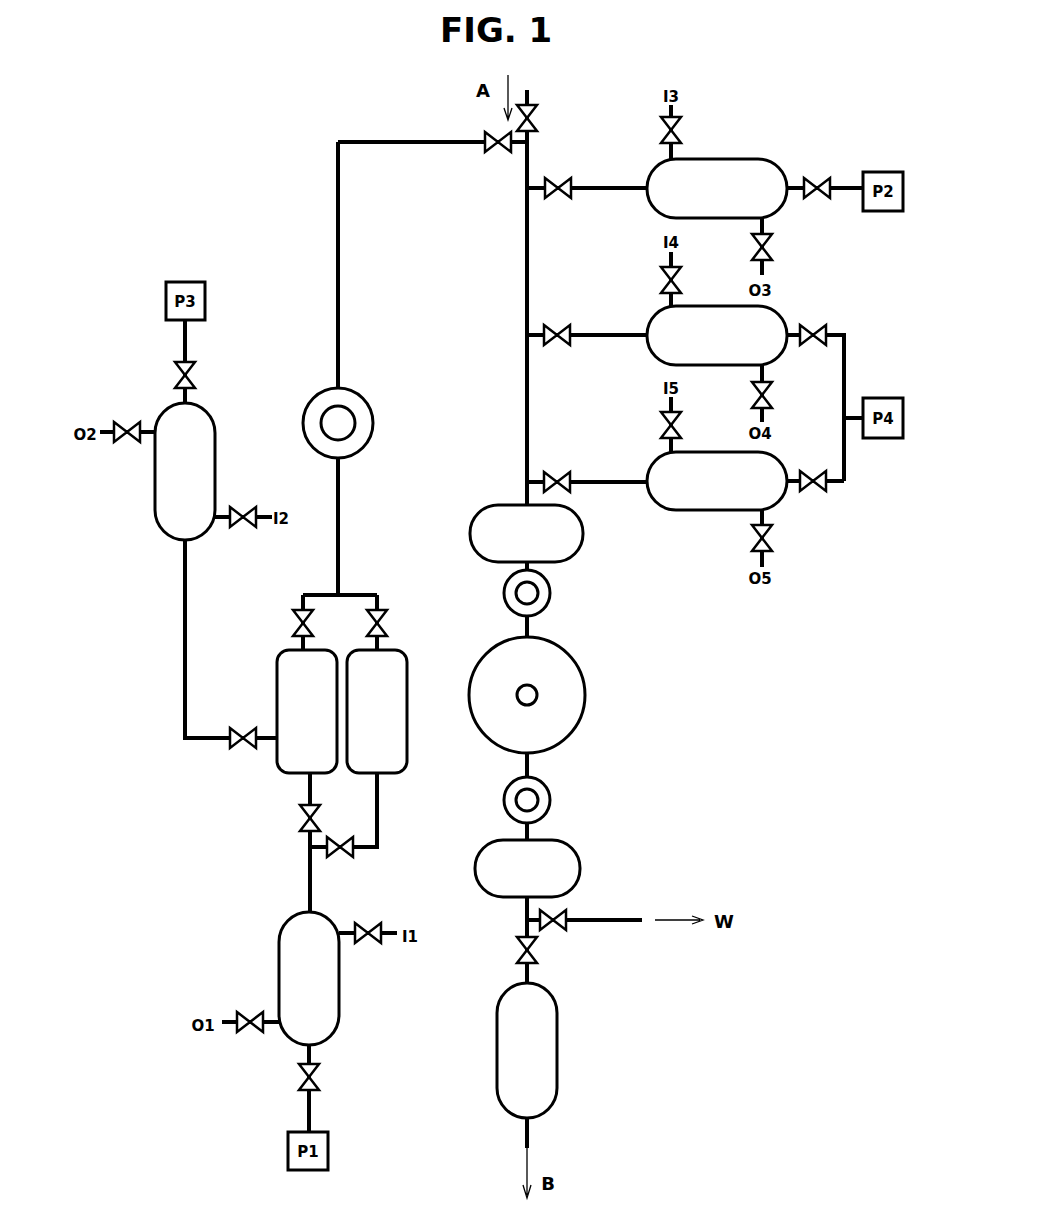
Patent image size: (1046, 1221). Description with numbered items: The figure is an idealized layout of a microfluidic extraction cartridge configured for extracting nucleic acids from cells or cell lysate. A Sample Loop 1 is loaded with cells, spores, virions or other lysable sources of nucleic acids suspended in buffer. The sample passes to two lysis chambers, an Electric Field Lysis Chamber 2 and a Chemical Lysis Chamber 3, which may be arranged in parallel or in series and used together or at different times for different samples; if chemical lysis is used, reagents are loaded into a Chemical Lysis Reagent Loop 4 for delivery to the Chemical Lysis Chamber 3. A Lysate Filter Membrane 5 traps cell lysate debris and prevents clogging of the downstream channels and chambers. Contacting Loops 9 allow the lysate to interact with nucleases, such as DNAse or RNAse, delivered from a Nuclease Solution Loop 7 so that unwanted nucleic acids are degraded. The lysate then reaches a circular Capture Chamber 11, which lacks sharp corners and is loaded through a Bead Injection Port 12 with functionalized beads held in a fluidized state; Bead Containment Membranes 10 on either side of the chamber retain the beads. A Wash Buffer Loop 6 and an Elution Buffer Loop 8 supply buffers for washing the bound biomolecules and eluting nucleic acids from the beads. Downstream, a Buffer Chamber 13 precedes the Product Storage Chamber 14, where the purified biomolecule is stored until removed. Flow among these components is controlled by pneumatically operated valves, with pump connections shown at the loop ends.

The sample loop 1 is at (295, 950).
The electric field lysis chamber 2 is at (390, 763).
The chemical lysis chamber 3 is at (305, 753).
The chemical lysis reagent loop 4 is at (180, 518).
The lysate filter membrane 5 is at (334, 420).
The wash buffer loop 6 is at (720, 183).
The nuclease solution loop 7 is at (740, 333).
The elution buffer loop 8 is at (748, 480).
The contacting loops 9 is at (562, 547).
The bead containment membranes 10 is at (540, 597).
The capture chamber 11 is at (497, 680).
The bead injection port 12 is at (538, 695).
The buffer chamber 13 is at (568, 866).
The product storage chamber 14 is at (540, 1045).